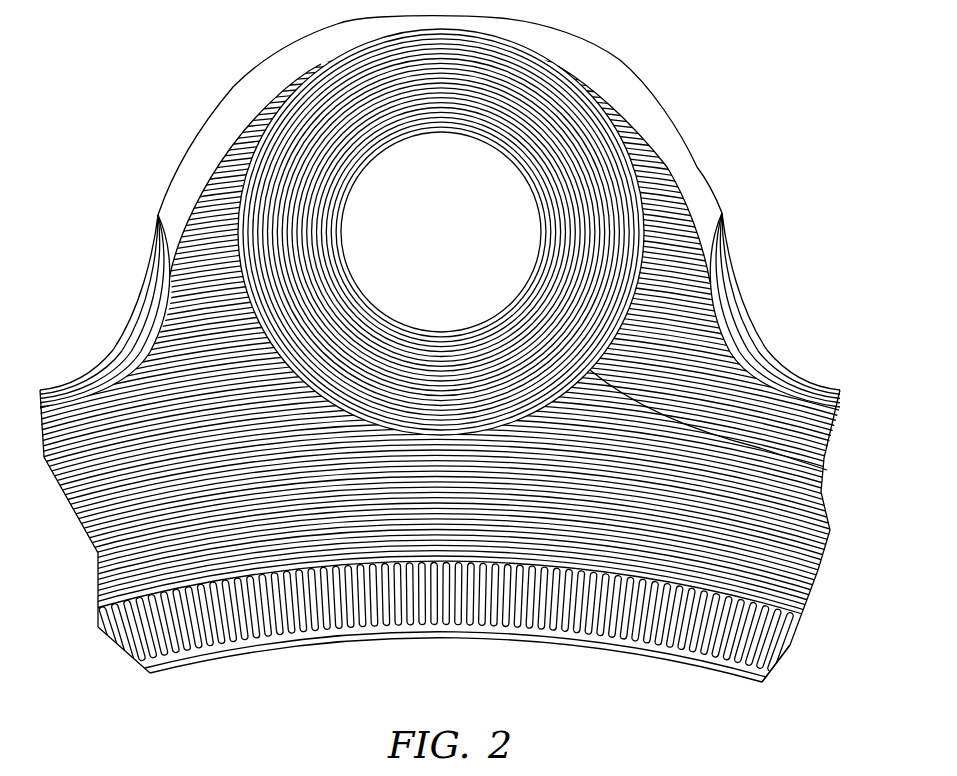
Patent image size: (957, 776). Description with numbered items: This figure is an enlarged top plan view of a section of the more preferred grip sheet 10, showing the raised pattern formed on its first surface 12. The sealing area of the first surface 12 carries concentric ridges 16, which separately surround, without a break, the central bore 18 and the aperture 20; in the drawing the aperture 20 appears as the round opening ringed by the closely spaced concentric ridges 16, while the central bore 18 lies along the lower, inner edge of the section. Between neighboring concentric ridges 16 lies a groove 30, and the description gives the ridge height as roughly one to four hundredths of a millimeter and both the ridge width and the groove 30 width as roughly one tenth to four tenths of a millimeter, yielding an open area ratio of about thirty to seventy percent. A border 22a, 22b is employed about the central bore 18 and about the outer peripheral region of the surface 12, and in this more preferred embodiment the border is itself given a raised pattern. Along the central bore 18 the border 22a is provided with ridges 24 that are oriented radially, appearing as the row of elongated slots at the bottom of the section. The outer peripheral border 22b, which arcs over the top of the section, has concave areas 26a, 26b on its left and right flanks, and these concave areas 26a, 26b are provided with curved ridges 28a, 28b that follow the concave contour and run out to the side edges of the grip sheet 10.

The grip sheet 10 is at (90, 657).
The first surface 12 is at (88, 527).
The concentric ridges 16 is at (668, 432).
The central bore 18 is at (546, 710).
The aperture 20 is at (453, 251).
The border 22a is at (792, 647).
The border 22b is at (643, 64).
The ridges 24 is at (707, 647).
The concave area 26a is at (139, 298).
The concave area 26b is at (744, 307).
The curved ridges 28a is at (97, 380).
The curved ridges 28b is at (770, 370).
The groove 30 is at (826, 551).